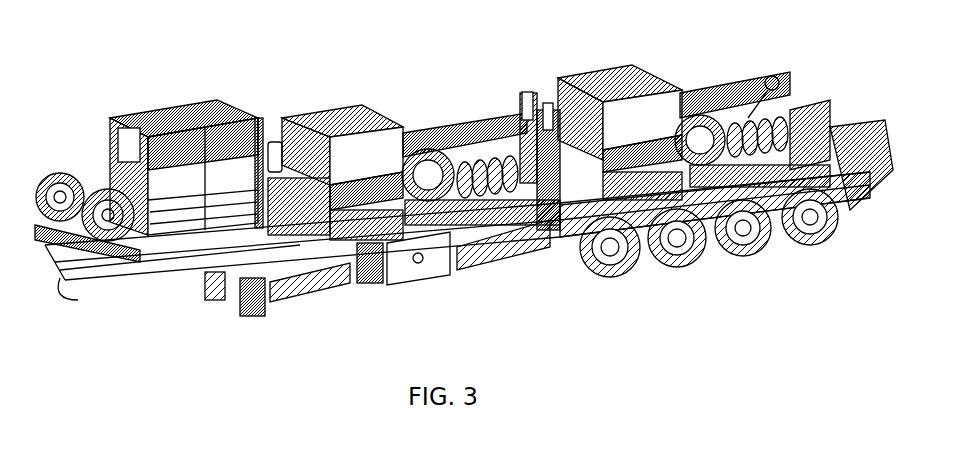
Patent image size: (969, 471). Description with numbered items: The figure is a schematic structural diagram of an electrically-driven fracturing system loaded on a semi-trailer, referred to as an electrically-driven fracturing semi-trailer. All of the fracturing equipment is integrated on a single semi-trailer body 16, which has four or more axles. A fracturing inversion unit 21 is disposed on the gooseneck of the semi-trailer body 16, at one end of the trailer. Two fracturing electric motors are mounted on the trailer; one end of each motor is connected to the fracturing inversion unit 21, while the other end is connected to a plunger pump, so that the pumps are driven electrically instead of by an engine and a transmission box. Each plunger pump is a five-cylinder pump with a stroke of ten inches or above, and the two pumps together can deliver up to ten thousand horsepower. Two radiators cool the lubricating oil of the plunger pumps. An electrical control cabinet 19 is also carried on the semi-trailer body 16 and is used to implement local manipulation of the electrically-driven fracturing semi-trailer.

The semi-trailer body 16 is at (170, 263).
The electrical control cabinet 19 is at (347, 290).
The fracturing inversion unit 21 is at (140, 110).